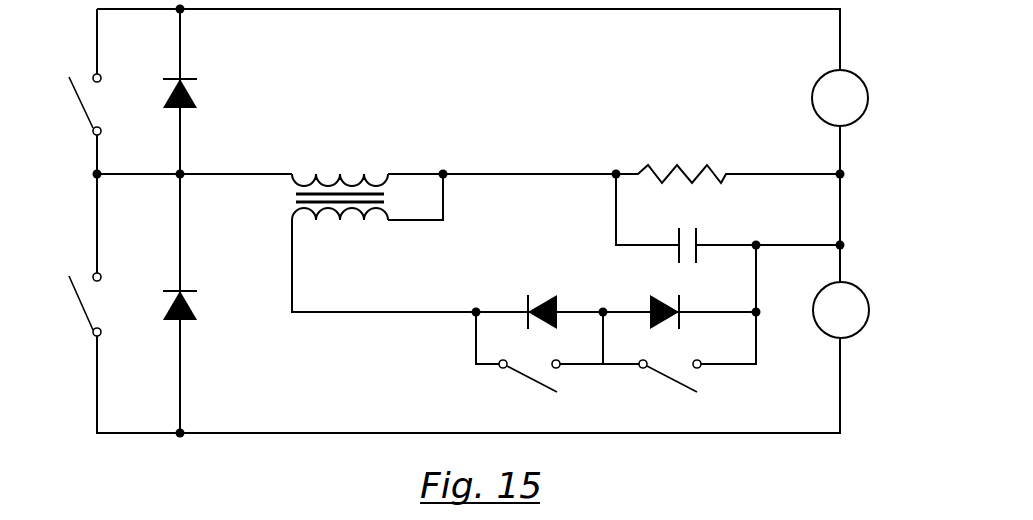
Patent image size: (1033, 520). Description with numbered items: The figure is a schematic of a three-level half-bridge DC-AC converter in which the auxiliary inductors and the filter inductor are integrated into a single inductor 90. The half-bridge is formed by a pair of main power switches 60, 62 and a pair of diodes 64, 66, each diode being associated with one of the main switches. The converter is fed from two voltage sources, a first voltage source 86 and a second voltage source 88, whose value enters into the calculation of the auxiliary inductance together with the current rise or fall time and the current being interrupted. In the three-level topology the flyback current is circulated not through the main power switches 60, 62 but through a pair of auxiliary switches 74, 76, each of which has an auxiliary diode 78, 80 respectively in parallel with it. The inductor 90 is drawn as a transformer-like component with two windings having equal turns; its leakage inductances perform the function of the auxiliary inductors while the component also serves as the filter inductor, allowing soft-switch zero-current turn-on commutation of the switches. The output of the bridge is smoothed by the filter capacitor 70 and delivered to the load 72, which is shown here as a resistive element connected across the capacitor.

The main power switch 60 is at (82, 111).
The main power switch 62 is at (82, 310).
The diode 64 is at (191, 78).
The diode 66 is at (190, 290).
The filter capacitor 70 is at (698, 239).
The load 72 is at (676, 167).
The auxiliary switch 74 is at (535, 384).
The auxiliary switch 76 is at (677, 384).
The auxiliary diode 78 is at (525, 302).
The auxiliary diode 80 is at (683, 300).
The voltage source V1 86 is at (865, 80).
The voltage source V2 88 is at (864, 285).
The inductor 90 is at (360, 153).